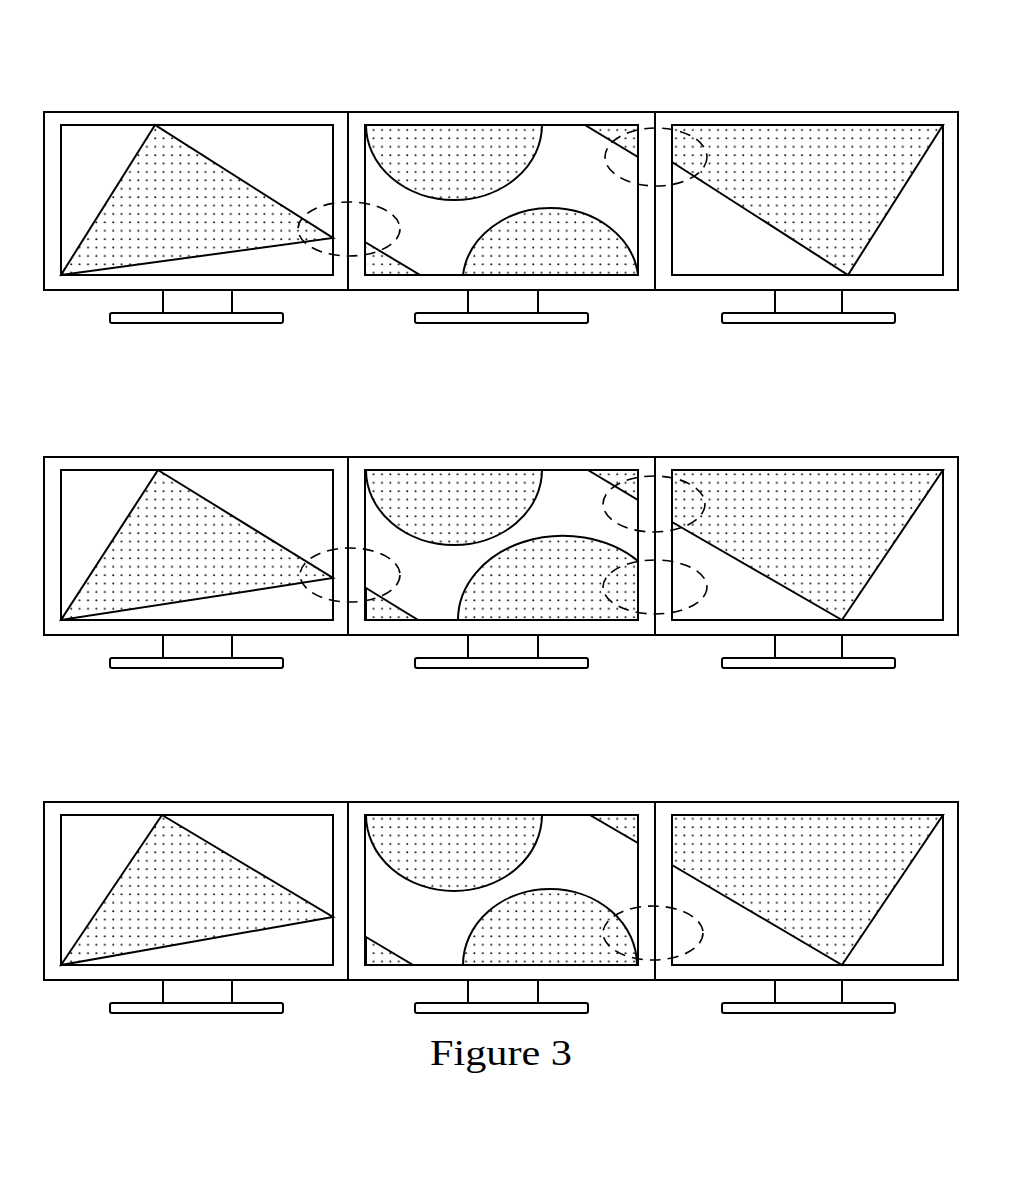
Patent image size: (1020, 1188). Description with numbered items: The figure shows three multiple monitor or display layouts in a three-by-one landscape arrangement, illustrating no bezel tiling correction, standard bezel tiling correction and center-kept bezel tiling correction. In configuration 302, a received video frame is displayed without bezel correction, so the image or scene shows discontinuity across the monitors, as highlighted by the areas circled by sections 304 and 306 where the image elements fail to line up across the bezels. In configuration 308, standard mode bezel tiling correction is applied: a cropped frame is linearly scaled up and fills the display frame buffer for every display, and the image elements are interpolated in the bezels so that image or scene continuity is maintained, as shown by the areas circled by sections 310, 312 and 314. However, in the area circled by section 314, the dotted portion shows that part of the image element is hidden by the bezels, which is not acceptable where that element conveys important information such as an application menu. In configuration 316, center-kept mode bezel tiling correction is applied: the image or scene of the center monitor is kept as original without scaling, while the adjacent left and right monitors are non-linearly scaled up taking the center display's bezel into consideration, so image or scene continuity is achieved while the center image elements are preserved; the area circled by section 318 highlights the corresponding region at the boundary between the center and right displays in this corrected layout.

The configuration 302 is at (268, 66).
The section 304 is at (400, 239).
The section 306 is at (680, 135).
The configuration 308 is at (268, 411).
The section 310 is at (680, 480).
The section 312 is at (400, 585).
The section 314 is at (703, 588).
The configuration 316 is at (269, 759).
The aligned image region between second and third displays 318 is at (703, 933).